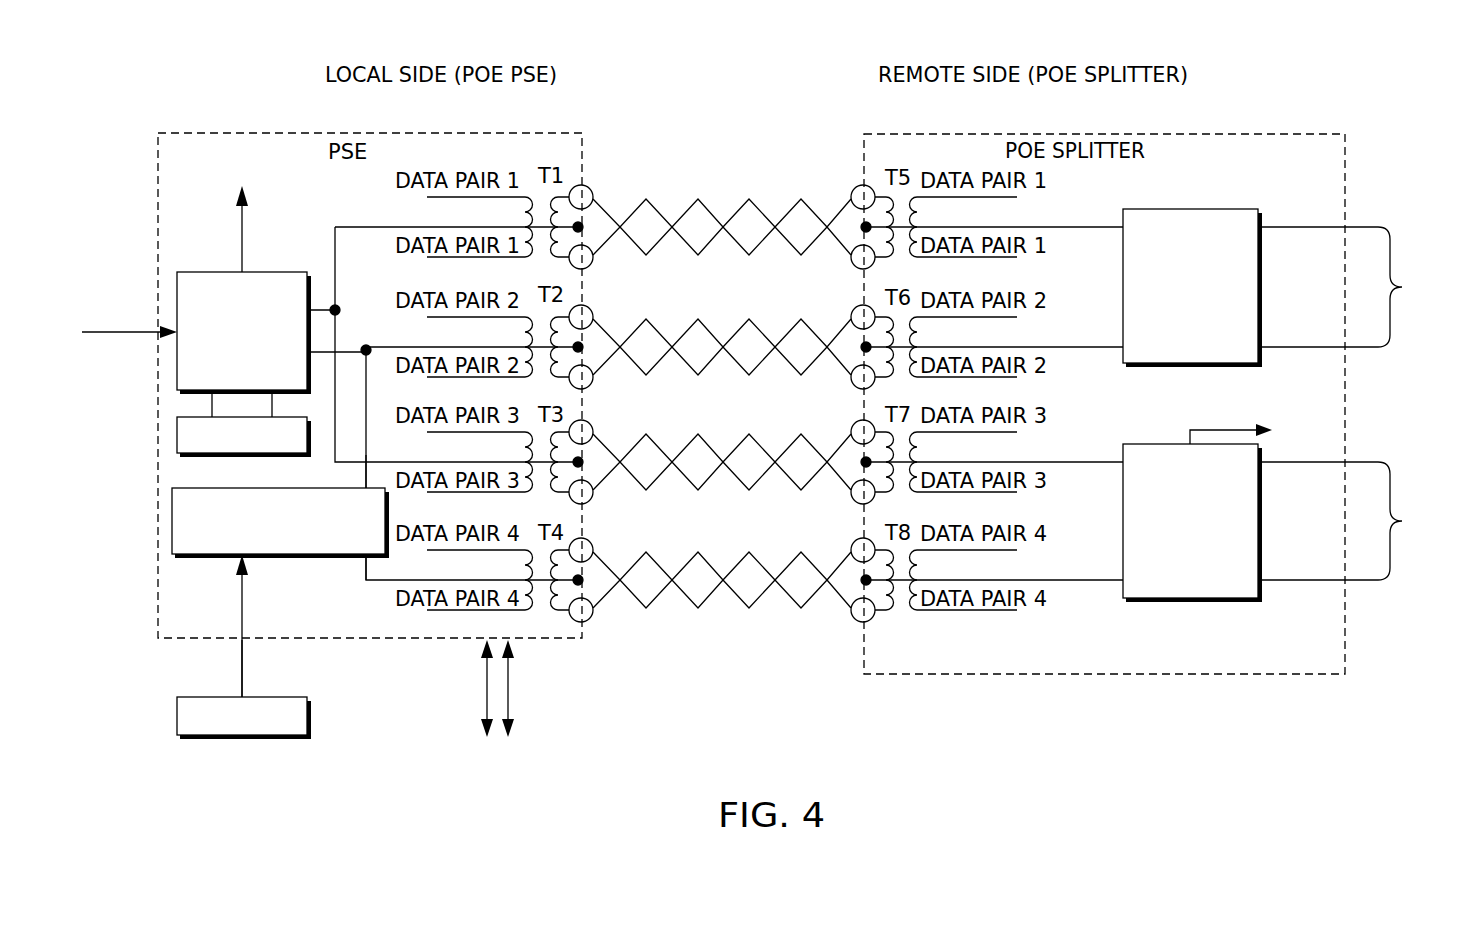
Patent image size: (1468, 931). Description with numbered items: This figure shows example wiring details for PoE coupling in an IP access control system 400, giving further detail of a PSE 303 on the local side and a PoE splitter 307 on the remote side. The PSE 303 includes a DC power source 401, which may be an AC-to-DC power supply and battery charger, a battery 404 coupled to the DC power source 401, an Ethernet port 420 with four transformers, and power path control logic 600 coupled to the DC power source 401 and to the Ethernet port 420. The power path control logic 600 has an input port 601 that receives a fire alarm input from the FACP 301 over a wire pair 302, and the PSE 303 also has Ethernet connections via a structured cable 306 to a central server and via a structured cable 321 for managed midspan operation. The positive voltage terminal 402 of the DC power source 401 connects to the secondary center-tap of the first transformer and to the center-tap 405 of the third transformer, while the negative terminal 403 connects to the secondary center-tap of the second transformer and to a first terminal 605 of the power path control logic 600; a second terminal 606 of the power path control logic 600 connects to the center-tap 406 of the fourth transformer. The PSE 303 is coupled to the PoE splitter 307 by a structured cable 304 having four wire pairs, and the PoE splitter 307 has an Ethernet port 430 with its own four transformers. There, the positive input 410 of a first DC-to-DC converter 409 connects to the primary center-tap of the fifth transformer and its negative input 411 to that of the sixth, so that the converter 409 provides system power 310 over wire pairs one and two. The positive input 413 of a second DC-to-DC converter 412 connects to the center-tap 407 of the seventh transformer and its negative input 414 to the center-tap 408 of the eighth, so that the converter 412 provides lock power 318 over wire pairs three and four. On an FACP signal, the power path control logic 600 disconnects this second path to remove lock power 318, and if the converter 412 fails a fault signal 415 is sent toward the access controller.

The IP access control system 400 is at (1276, 64).
The PSE 303 is at (157, 608).
The DC power source 401 is at (176, 368).
The battery 404 is at (176, 435).
The power path control logic 600 is at (171, 523).
The positive voltage terminal 402 is at (349, 226).
The negative terminal 403 is at (362, 348).
The first terminal 605 is at (363, 487).
The second terminal 606 is at (363, 557).
The input port 601 is at (243, 557).
The wire pair 302 is at (241, 676).
The FACP 301 is at (243, 736).
The structured cable 321 is at (486, 712).
The structured cable 306 is at (509, 706).
The Ethernet port 420 is at (596, 166).
The center-tap 405 is at (592, 470).
The center-tap 406 is at (592, 588).
The structured cable 304 is at (763, 160).
The PoE splitter 307 is at (1079, 676).
The Ethernet port 430 is at (852, 172).
The center-tap 407 is at (852, 470).
The center-tap 408 is at (852, 588).
The positive input 410 is at (1072, 229).
The negative input 411 is at (1077, 349).
The positive input 413 is at (1080, 464).
The negative input 414 is at (1080, 582).
The first DC-to-DC converter 409 is at (1203, 209).
The system power 310 is at (1452, 302).
The second DC-to-DC converter 412 is at (1187, 600).
The fault signal output 415 is at (1212, 446).
The lock power 318 is at (1452, 534).